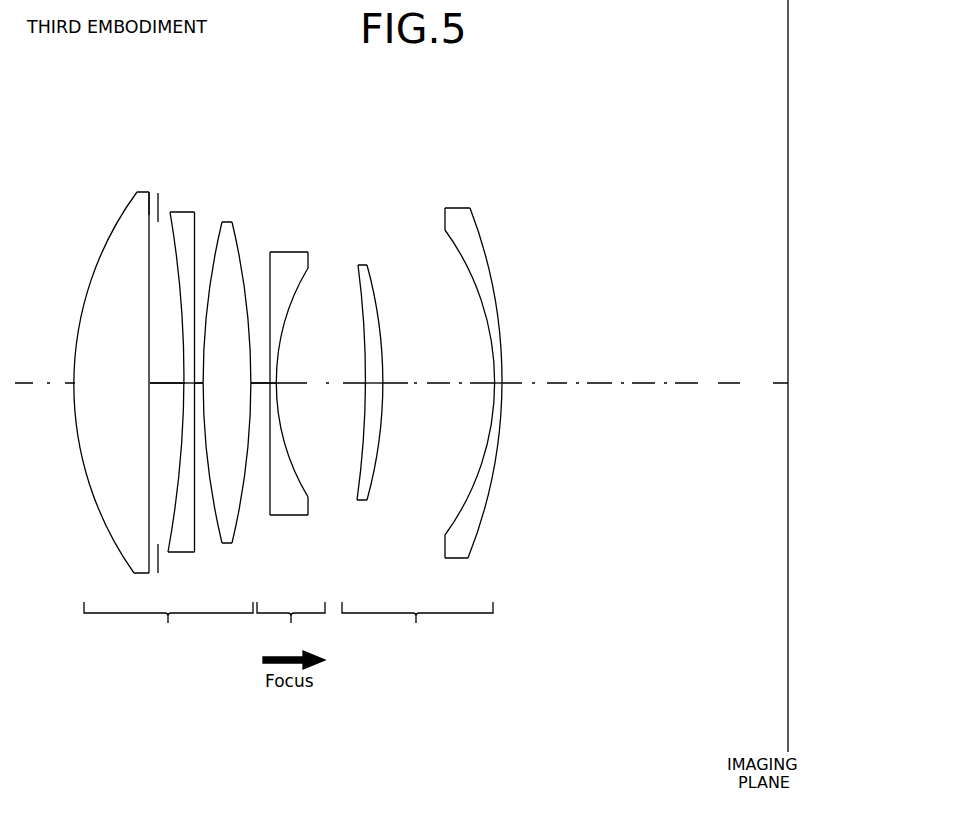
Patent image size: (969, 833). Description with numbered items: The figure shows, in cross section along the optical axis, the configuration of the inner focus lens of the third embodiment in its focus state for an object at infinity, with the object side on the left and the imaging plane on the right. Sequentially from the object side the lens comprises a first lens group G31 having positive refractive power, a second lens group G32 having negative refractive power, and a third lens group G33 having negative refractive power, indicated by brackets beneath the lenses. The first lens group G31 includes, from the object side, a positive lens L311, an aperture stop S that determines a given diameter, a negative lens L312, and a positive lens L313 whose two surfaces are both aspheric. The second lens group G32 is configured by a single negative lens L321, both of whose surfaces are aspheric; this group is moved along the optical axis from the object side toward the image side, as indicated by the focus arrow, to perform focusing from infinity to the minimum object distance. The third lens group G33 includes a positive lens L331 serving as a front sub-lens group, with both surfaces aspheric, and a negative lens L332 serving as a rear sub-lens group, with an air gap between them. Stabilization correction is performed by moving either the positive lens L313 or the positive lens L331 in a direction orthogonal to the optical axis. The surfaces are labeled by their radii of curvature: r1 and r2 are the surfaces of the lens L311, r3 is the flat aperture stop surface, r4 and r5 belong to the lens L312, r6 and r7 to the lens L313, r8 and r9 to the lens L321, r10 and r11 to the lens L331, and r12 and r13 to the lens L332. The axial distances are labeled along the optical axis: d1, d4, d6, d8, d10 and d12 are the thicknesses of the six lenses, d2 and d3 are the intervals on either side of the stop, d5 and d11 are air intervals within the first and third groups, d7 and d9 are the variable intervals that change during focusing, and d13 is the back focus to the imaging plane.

The positive lens L311 is at (84, 373).
The negative lens L312 is at (164, 348).
The positive lens L313 is at (234, 354).
The negative lens L321 is at (297, 350).
The positive lens L331 is at (374, 350).
The negative lens L332 is at (477, 351).
The aperture stop S is at (158, 194).
The first lens group G31 is at (168, 627).
The second lens group G32 is at (291, 627).
The third lens group G33 is at (417, 627).
The radius of curvature of lens surface r1 is at (77, 333).
The radius of curvature of lens surface r2 is at (148, 325).
The radius of curvature of diaphragm surface r3 is at (156, 196).
The radius of curvature of lens surface r4 is at (175, 270).
The radius of curvature of lens surface r5 is at (192, 312).
The radius of curvature of lens surface r6 is at (217, 257).
The radius of curvature of lens surface r7 is at (238, 240).
The radius of curvature of lens surface r8 is at (270, 283).
The radius of curvature of lens surface r9 is at (292, 303).
The radius of curvature of lens surface r10 is at (362, 338).
The radius of curvature of lens surface r11 is at (382, 328).
The radius of curvature of lens surface r12 is at (467, 262).
The radius of curvature of lens surface r13 is at (490, 262).
The lens thickness d1 is at (112, 387).
The surface interval d2 is at (152, 405).
The surface interval d3 is at (173, 387).
The lens thickness d4 is at (184, 387).
The surface interval d5 is at (198, 387).
The lens thickness d6 is at (225, 387).
The surface interval d7 is at (262, 387).
The lens thickness d8 is at (273, 385).
The surface interval d9 is at (315, 387).
The lens thickness d10 is at (373, 385).
The surface interval d11 is at (448, 387).
The lens thickness d12 is at (497, 385).
The surface interval d13 is at (710, 387).